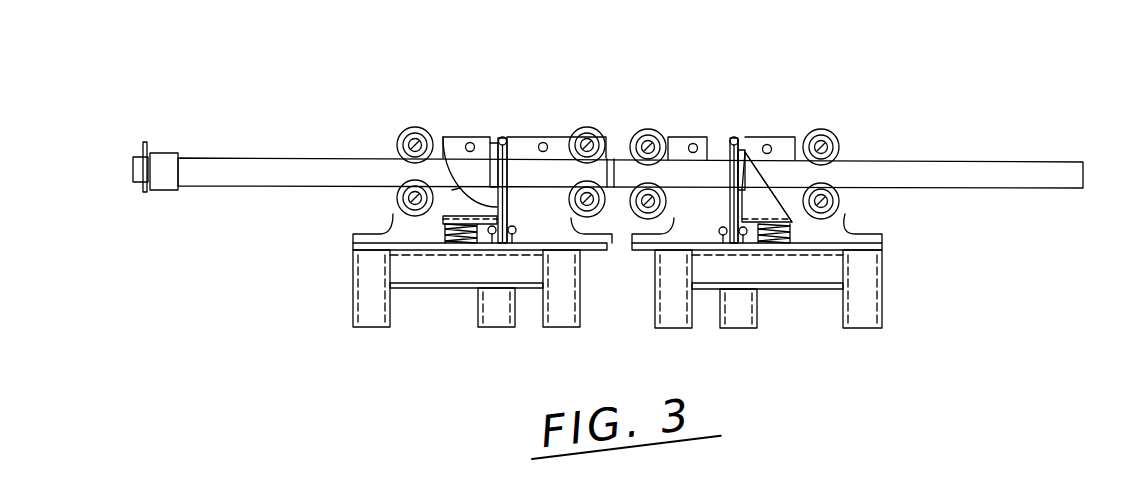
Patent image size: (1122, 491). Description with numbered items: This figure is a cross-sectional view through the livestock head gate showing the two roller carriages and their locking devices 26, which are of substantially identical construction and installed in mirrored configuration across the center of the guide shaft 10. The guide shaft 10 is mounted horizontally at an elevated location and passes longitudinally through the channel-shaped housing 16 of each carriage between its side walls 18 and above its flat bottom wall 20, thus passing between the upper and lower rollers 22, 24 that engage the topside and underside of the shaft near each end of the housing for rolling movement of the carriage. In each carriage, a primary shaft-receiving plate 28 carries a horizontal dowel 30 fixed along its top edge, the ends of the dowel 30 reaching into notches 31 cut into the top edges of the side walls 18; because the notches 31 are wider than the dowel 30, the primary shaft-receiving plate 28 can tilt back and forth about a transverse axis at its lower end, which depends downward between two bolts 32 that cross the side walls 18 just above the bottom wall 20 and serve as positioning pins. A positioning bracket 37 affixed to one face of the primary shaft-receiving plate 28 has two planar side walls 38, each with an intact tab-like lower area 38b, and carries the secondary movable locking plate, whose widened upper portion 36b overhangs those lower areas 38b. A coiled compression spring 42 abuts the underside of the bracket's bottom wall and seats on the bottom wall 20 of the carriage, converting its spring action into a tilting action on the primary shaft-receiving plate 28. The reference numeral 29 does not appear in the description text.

The guide shaft 10 is at (1012, 177).
The housing 16 is at (412, 243).
The side walls 18 is at (408, 229).
The bottom wall 20 is at (355, 253).
The rollers 22 is at (408, 127).
The rollers 24 is at (397, 197).
The locking device 26 is at (516, 124).
The primary shaft-receiving plate 28 is at (727, 188).
The plate 29 is at (524, 150).
The dowel 30 is at (503, 137).
The notches 31 is at (513, 140).
The bolts 32 is at (510, 245).
The widened upper portion 36b is at (783, 193).
The positioning bracket 37 is at (451, 199).
The bracket side walls 38 is at (483, 170).
The intact tab-like lower area 38b is at (443, 135).
The coiled compression spring 42 is at (462, 245).